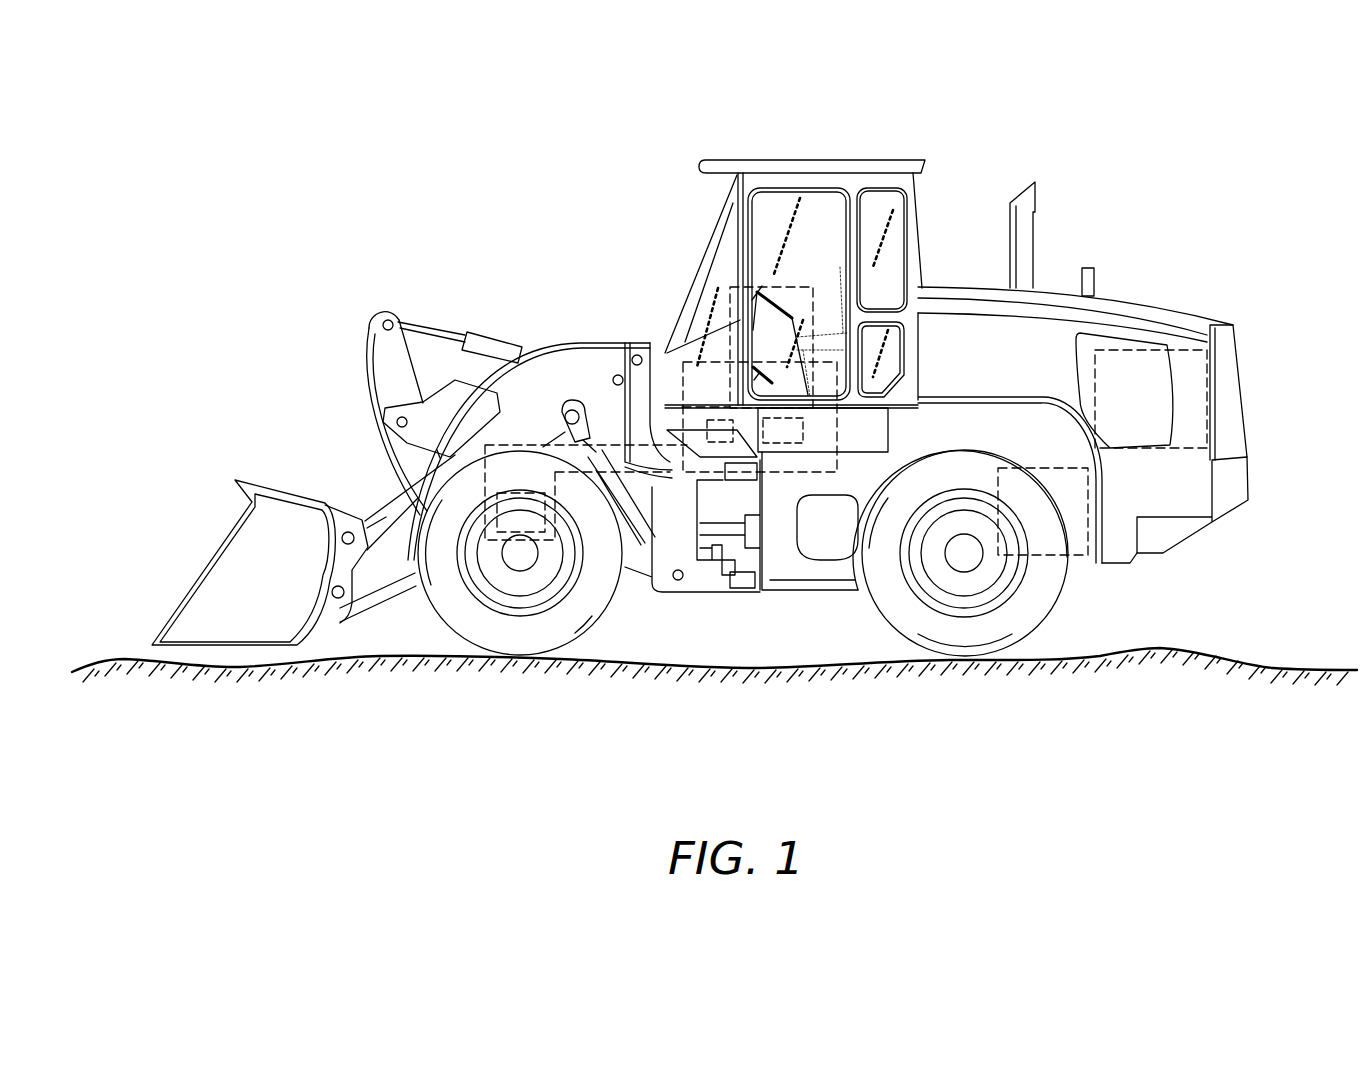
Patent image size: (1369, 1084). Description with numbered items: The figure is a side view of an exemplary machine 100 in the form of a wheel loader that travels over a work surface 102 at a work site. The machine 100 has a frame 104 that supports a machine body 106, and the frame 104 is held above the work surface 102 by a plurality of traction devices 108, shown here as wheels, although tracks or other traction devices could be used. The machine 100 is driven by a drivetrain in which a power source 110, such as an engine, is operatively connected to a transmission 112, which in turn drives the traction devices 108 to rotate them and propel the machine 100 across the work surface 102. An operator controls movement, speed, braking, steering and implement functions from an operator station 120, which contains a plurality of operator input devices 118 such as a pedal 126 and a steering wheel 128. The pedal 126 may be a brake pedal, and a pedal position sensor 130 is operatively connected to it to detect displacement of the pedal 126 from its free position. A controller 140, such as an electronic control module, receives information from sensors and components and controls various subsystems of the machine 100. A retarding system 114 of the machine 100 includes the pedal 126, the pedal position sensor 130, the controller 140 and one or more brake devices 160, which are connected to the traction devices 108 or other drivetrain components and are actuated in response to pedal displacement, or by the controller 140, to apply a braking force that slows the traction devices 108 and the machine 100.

The machine 100 is at (505, 210).
The work surface 102 is at (117, 660).
The frame 104 is at (1190, 540).
The machine body 106 is at (1145, 320).
The traction devices 108 is at (605, 607).
The power source 110 is at (1208, 398).
The transmission 112 is at (1090, 565).
The retarding system 114 is at (670, 352).
The operator input devices 118 is at (767, 286).
The operator station 120 is at (798, 296).
The pedal 126 is at (748, 374).
The steering wheel 128 is at (783, 293).
The pedal position sensor 130 is at (707, 442).
The controller 140 is at (787, 443).
The brake devices 160 is at (520, 530).